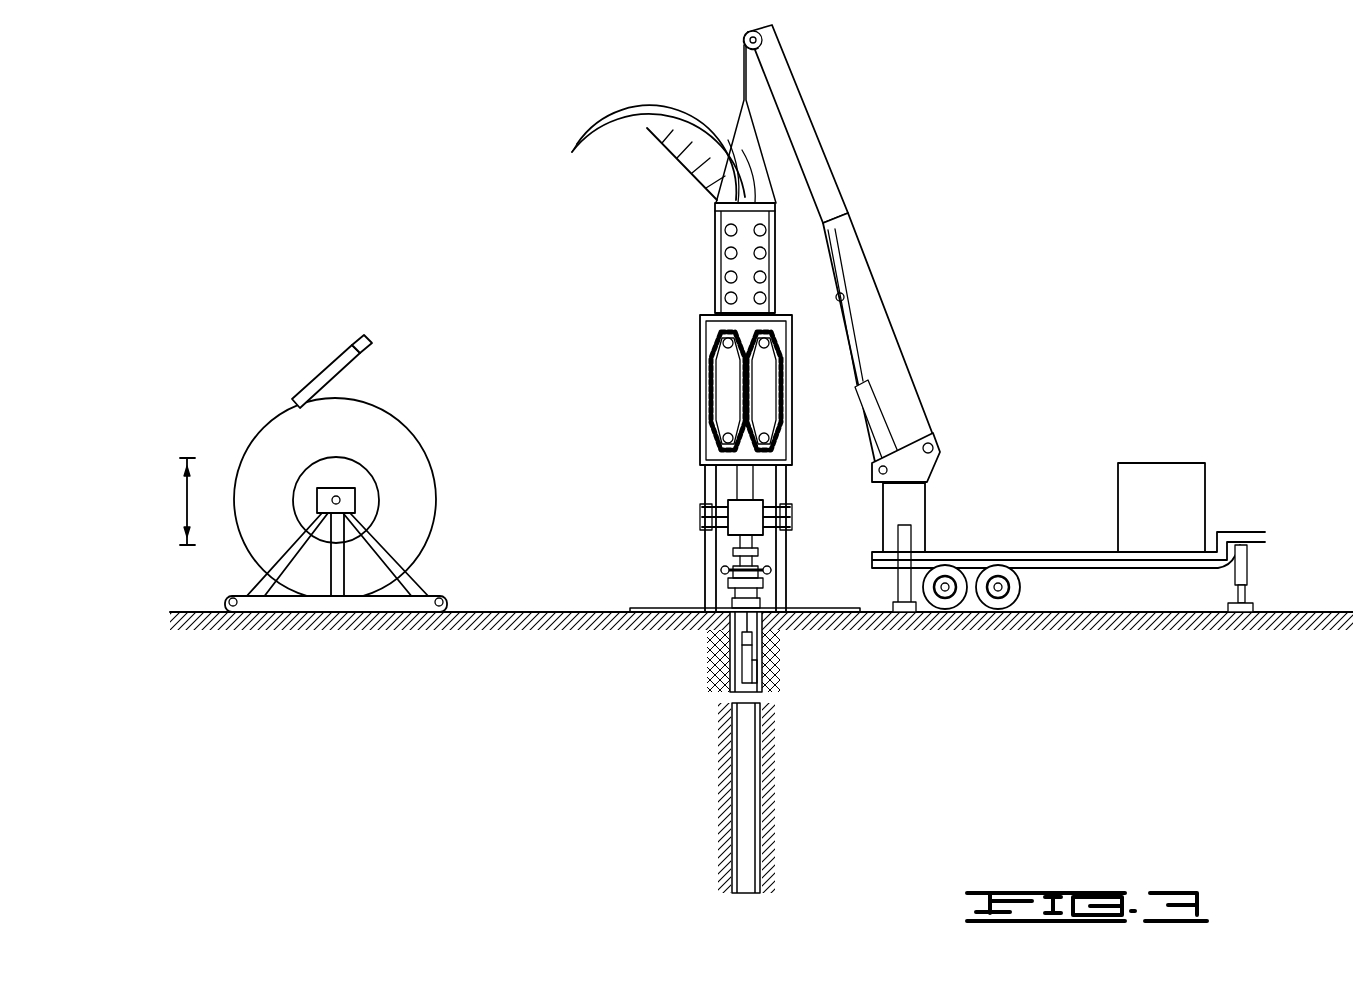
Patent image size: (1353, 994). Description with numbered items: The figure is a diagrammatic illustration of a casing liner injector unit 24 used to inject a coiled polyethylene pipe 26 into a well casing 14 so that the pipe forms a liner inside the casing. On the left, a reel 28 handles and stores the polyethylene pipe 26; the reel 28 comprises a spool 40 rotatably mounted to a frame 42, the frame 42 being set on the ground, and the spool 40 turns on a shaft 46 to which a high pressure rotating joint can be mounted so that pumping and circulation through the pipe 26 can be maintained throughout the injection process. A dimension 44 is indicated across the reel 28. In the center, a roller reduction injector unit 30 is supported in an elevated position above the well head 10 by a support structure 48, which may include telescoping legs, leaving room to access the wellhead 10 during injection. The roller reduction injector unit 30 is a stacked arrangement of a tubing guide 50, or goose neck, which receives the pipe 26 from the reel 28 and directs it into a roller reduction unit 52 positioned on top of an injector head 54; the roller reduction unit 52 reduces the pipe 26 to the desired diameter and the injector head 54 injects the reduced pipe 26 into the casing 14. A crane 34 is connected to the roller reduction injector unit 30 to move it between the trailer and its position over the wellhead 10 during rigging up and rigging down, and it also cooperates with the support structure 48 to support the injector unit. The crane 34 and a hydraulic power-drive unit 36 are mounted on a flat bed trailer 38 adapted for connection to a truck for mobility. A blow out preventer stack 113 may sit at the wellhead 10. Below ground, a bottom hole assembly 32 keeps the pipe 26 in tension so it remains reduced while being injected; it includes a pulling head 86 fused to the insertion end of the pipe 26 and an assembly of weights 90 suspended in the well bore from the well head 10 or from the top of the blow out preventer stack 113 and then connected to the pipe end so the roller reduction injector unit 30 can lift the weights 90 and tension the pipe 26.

The well head 10 is at (764, 597).
The casing 14 is at (760, 792).
The casing liner injector unit 24 is at (924, 127).
The coiled polyethylene pipe 26 is at (320, 376).
The reel 28 is at (410, 418).
The roller reduction injector unit 30 is at (698, 338).
The bottom hole assembly 32 is at (349, 342).
The crane 34 is at (900, 340).
The hydraulic power-drive unit 36 is at (1143, 516).
The flat bed trailer 38 is at (1022, 552).
The spool 40 is at (436, 530).
The frame 42 is at (418, 583).
The reel width dimension 44 is at (187, 500).
The shaft 46 is at (340, 500).
The support structure 48 is at (788, 492).
The tubing guide 50 is at (608, 140).
The roller reduction unit 52 is at (714, 265).
The injector head 54 is at (699, 439).
The pulling head 86 is at (371, 357).
The assembly of weights 90 is at (752, 662).
The blow out preventer stack 113 is at (737, 530).